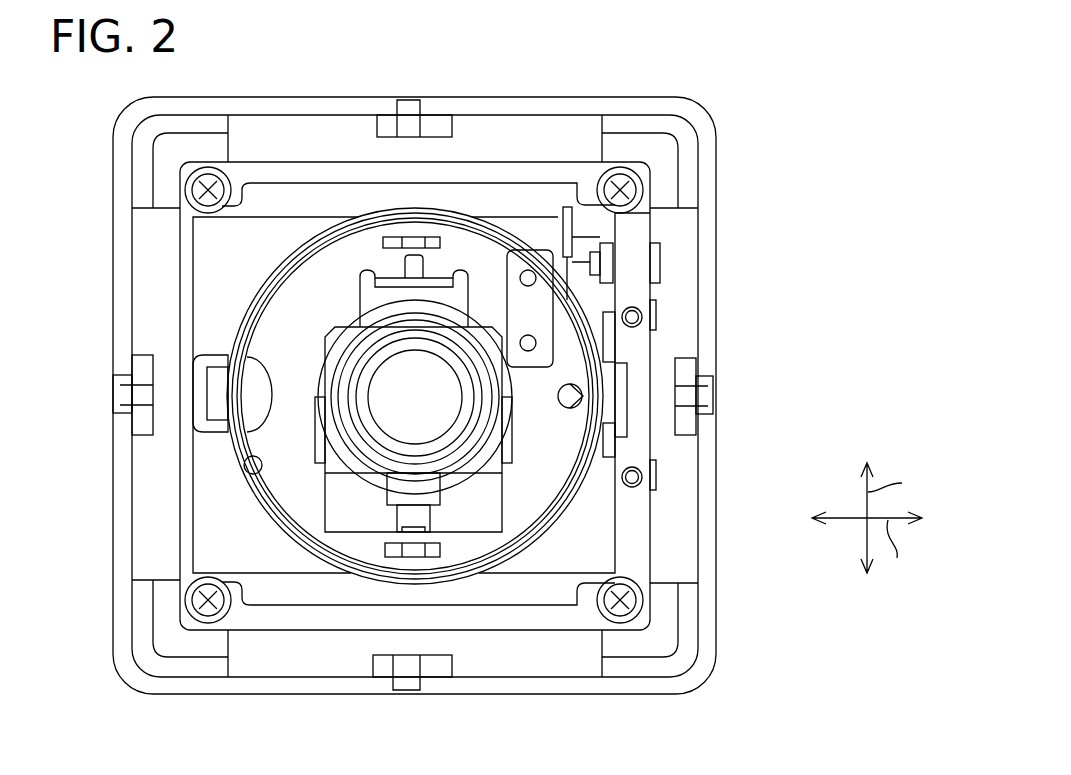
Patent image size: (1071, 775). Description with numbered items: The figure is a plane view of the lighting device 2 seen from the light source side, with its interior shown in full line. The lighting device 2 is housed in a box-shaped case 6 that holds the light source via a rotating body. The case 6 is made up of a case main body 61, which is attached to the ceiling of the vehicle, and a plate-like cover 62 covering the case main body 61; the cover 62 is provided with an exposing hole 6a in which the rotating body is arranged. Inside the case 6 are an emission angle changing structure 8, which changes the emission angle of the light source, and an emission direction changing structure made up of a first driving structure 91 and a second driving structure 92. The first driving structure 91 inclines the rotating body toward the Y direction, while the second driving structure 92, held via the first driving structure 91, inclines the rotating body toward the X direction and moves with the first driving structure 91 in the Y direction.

The lighting device 2 is at (748, 79).
The case 6 is at (797, 557).
The case main body 61 is at (715, 605).
The cover 62 is at (665, 562).
The exposing hole 6a is at (500, 437).
The emission angle changing structure 8 is at (437, 400).
The first driving structure 91 is at (663, 262).
The second driving structure 92 is at (423, 267).